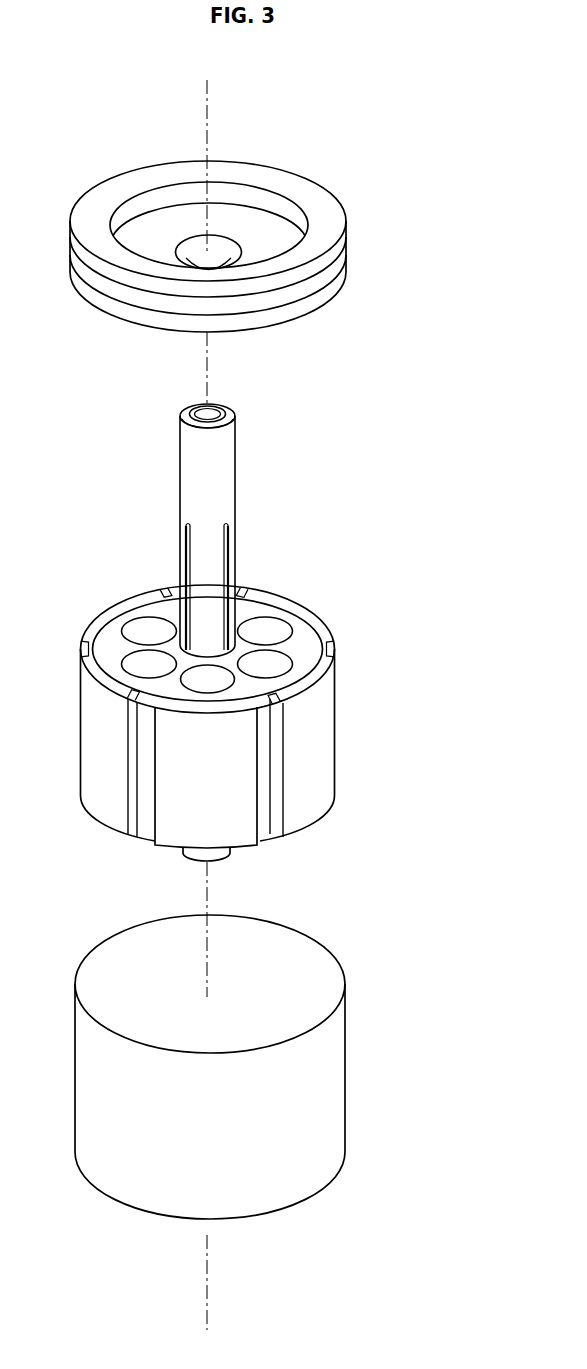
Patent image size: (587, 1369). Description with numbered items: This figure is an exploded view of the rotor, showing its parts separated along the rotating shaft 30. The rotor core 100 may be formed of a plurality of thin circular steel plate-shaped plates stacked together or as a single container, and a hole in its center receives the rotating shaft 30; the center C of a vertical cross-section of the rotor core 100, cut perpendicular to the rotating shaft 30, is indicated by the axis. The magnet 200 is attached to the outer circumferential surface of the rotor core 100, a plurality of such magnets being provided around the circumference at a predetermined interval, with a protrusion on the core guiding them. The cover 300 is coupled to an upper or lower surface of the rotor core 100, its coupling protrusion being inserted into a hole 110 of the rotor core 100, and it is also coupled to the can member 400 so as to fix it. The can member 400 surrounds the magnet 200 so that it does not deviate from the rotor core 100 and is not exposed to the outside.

The center C is at (207, 88).
The rotating shaft 30 is at (258, 436).
The rotor core 100 is at (302, 637).
The hole 110 is at (260, 628).
The magnet 200 is at (315, 747).
The cover 300 is at (323, 229).
The can member 400 is at (320, 1085).